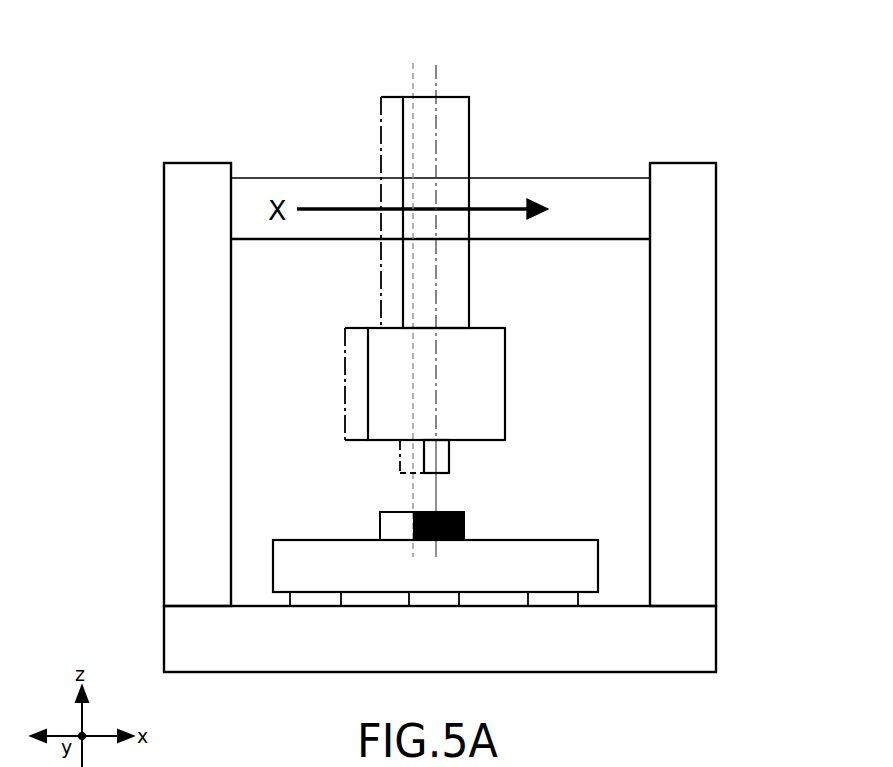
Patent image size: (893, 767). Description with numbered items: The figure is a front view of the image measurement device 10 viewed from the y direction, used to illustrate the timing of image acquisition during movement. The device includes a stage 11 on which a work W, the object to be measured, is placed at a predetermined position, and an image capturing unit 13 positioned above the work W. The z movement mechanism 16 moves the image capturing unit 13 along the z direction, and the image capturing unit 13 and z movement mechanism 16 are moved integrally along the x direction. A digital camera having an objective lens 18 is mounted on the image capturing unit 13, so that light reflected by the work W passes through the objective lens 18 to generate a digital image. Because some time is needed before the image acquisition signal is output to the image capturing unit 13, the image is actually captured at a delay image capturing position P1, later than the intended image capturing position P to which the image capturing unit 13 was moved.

The image measurement device 10 is at (538, 101).
The stage 11 is at (313, 538).
The image capturing unit 13 is at (492, 383).
The z movement mechanism 16 is at (460, 134).
The objective lens 18 is at (446, 462).
The work W is at (464, 520).
The image capturing position P is at (387, 28).
The delay image capturing position P1 is at (436, 78).